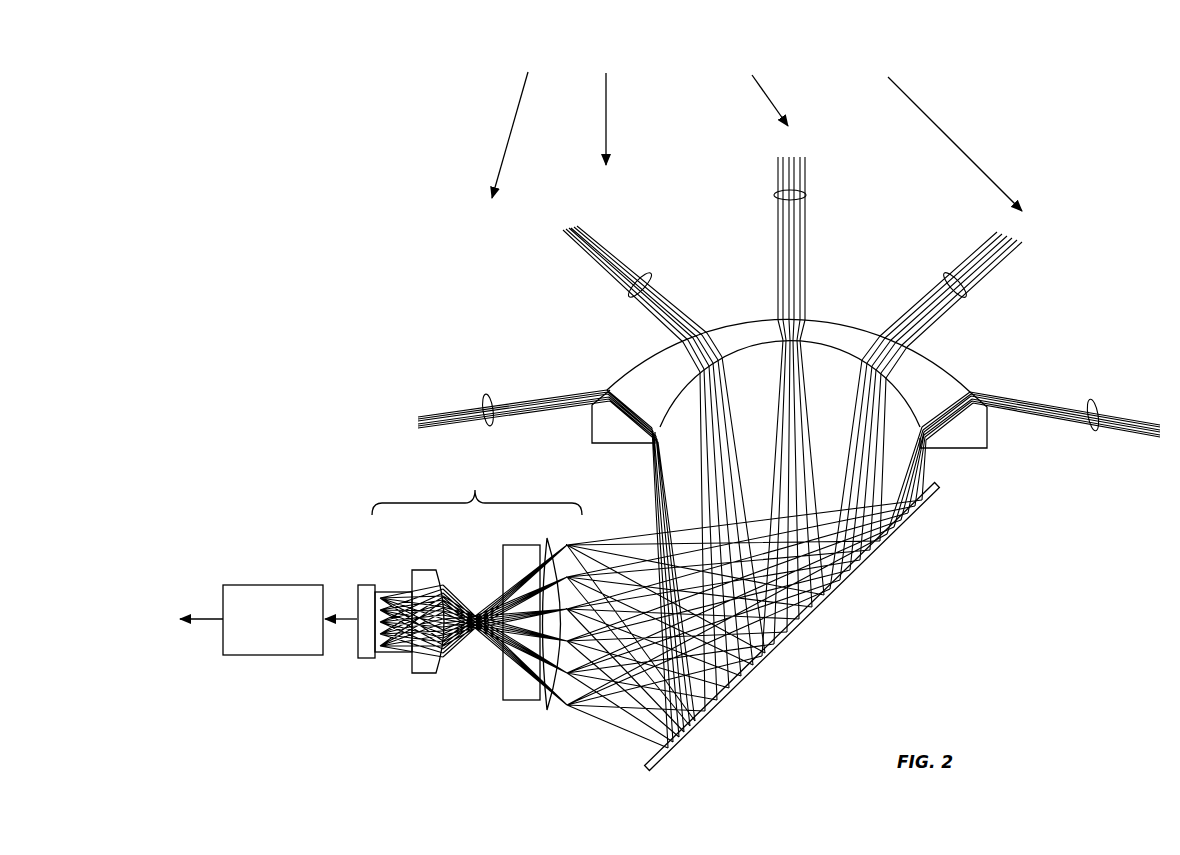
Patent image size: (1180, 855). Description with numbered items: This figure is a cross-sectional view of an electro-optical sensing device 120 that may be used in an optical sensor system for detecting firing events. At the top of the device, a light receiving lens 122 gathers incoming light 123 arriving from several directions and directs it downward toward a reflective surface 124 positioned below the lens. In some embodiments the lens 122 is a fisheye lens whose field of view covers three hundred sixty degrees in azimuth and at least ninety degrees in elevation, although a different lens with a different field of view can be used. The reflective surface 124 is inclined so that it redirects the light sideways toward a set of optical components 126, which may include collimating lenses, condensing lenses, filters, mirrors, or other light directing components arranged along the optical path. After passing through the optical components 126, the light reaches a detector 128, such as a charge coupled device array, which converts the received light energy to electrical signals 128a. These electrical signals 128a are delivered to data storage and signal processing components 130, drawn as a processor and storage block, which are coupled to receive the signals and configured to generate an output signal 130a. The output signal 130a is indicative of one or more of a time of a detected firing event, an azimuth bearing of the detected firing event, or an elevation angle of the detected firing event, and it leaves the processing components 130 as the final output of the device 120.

The electro-optical sensing device 120 is at (376, 125).
The light receiving lens 122 is at (845, 325).
The incoming light 123 is at (604, 130).
The reflective surface 124 is at (797, 630).
The set of optical components 126 is at (477, 589).
The image sensor 128 is at (367, 658).
The sensor output signal 128a is at (343, 613).
The data storage and signal processing components 130 is at (285, 657).
The output signal 130a is at (203, 615).